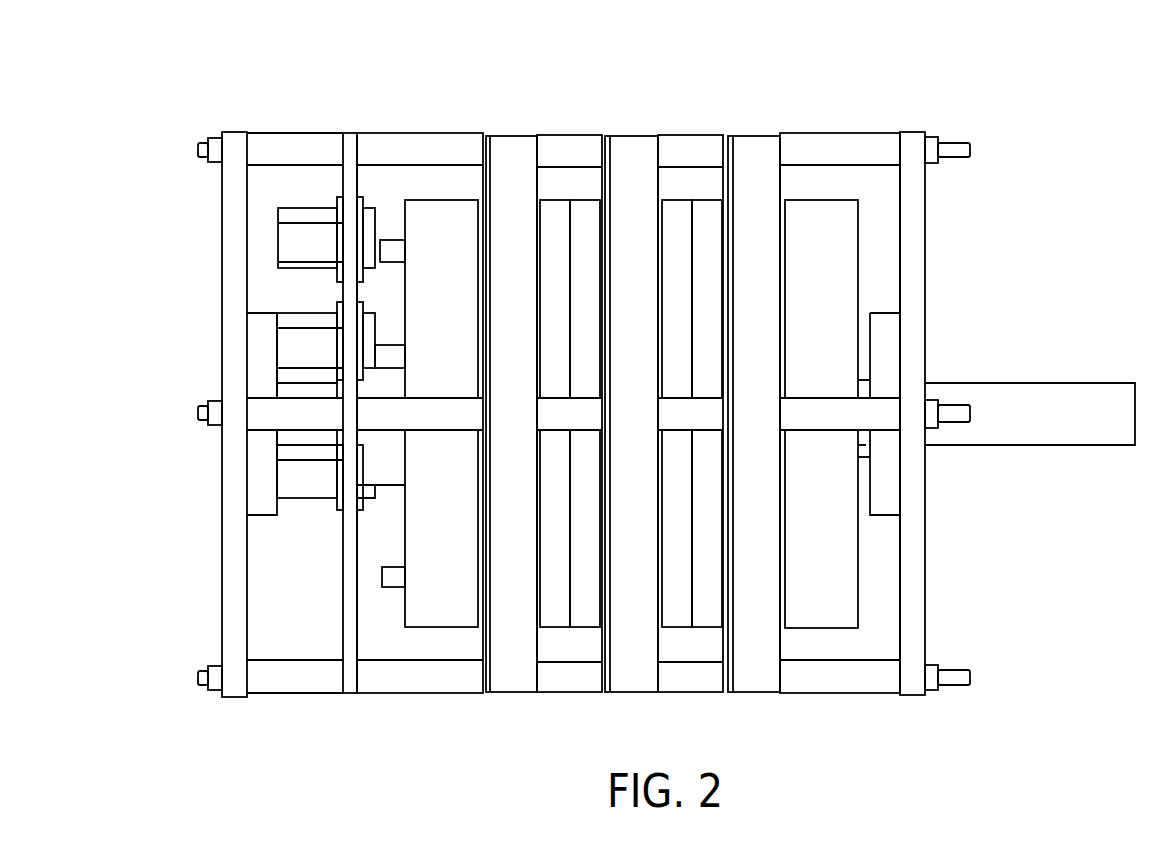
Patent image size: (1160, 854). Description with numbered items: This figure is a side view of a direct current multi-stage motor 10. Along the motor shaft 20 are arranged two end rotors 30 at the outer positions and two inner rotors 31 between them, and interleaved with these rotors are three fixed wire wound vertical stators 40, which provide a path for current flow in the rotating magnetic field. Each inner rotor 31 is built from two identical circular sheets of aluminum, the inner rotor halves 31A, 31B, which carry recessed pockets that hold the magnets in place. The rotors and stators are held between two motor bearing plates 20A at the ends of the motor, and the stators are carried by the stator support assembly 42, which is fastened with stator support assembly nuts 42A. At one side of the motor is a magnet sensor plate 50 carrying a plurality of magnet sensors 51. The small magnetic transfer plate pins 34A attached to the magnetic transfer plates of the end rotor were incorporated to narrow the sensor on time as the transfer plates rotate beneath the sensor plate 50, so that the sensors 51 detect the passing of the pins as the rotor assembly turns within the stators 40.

The motor 10 is at (957, 110).
The motor shaft 20 is at (1055, 440).
The motor end plate 20A is at (222, 297).
The end rotor assembly 30 is at (435, 222).
The inner rotor 31 is at (578, 637).
The inner rotor half 31A is at (588, 612).
The inner rotor half 31B is at (558, 612).
The magnetic transfer plate pins 34A is at (392, 583).
The stator assembly 40 is at (752, 135).
The stator support assembly 42 is at (835, 693).
The stator support assembly nut 42A is at (930, 695).
The magnet sensor plate 50 is at (353, 693).
The magnet sensors 51 is at (315, 495).